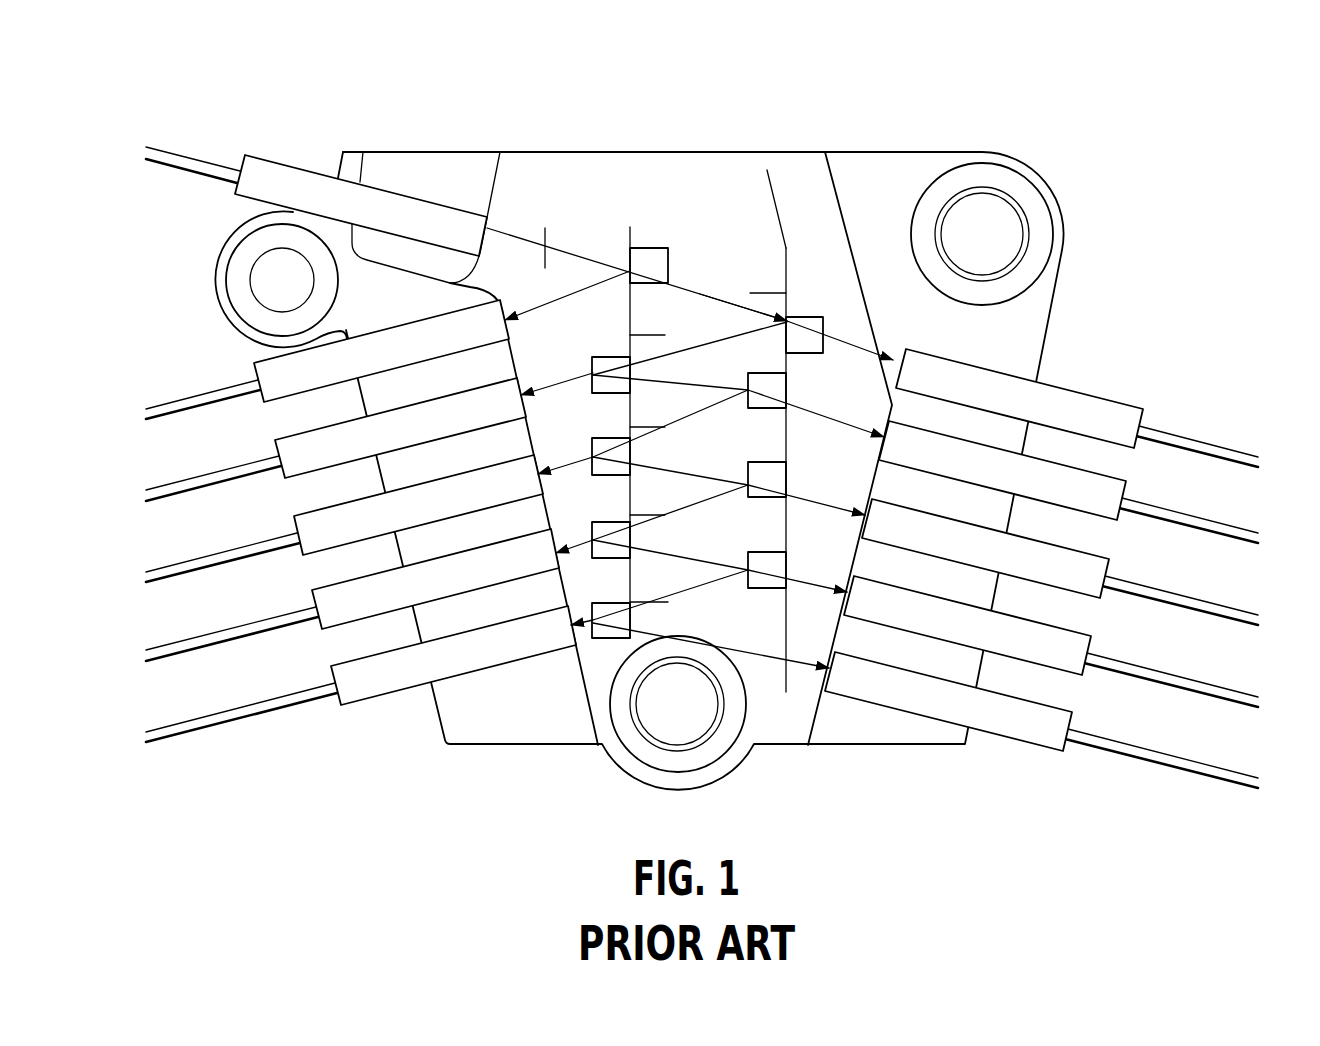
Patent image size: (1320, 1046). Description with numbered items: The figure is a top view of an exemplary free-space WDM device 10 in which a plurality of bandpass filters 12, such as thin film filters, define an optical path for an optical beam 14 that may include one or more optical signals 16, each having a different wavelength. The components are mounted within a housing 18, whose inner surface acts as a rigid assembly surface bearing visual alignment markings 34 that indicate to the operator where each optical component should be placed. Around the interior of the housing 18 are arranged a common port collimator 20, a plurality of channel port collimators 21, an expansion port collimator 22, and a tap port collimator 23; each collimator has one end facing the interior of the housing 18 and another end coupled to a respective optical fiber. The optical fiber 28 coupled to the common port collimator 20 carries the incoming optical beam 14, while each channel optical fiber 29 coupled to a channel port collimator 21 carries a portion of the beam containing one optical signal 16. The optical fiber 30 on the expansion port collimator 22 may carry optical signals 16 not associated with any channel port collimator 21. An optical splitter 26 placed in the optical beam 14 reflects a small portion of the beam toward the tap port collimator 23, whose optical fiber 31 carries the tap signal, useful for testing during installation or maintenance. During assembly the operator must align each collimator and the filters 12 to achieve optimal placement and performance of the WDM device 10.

The free-space WDM device 10 is at (942, 88).
The bandpass filters 12 is at (806, 317).
The optical beam 14 is at (573, 256).
The optical signals 16 is at (557, 380).
The housing 18 is at (805, 152).
The common port collimator 20 is at (312, 172).
The channel port collimators 21 is at (441, 401).
The expansion port collimator 22 is at (1065, 717).
The tap port collimator 23 is at (437, 318).
The optical splitter 26 is at (655, 248).
The optical fiber 28 is at (160, 150).
The channel optical fibers 29 is at (154, 490).
The optical fiber 30 is at (1247, 771).
The optical fiber 31 is at (156, 404).
The visual alignment markings 34 is at (630, 312).